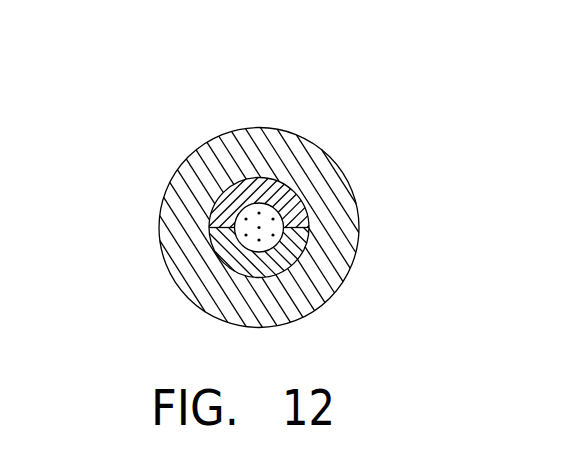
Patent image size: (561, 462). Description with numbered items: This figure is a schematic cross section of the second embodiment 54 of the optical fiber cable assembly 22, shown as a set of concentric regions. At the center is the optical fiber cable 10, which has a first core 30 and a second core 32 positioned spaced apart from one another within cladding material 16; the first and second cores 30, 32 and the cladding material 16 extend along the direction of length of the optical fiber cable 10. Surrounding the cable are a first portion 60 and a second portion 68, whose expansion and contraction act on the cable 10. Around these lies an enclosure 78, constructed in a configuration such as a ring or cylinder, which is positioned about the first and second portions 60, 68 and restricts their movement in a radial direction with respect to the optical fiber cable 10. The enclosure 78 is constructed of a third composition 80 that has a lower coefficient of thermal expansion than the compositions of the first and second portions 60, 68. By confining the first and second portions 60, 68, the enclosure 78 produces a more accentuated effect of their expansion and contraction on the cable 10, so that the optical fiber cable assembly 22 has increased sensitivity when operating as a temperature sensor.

The optical fiber cable 10 is at (274, 198).
The cladding material 16 is at (296, 265).
The optical fiber cable assembly 22 is at (331, 326).
The first core 30 is at (259, 228).
The second core 32 is at (258, 213).
The second embodiment 54 is at (236, 88).
The first portion 60 is at (295, 203).
The second portion 68 is at (272, 266).
The enclosure 78 is at (311, 172).
The third composition 80 is at (212, 290).